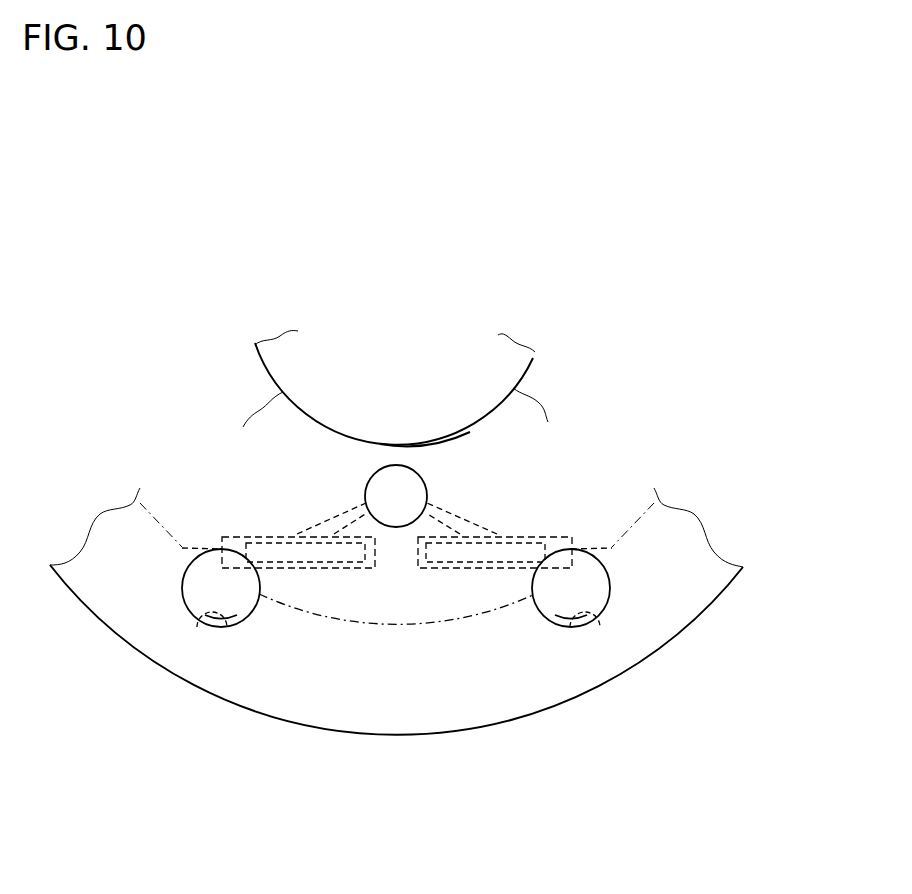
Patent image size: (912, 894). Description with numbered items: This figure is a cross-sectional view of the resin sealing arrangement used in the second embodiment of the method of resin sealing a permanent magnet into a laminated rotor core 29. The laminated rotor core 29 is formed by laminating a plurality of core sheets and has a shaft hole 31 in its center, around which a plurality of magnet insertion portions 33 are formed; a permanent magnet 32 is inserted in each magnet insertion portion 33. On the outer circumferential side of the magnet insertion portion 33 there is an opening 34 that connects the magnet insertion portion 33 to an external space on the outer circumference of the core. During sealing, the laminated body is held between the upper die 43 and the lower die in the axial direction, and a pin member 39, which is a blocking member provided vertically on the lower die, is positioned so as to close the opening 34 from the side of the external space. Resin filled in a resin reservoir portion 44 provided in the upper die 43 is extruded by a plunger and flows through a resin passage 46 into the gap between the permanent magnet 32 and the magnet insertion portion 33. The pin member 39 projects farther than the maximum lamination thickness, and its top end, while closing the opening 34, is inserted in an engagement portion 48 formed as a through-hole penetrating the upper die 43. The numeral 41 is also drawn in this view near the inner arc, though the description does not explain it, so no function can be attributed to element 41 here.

The laminated rotor core 29 is at (405, 667).
The shaft hole 31 is at (493, 385).
The permanent magnet 32 is at (321, 552).
The magnet insertion portion 33 is at (258, 538).
The opening 34 is at (225, 562).
The pin member 39 is at (229, 600).
The inner member 41 is at (283, 359).
The upper die 43 is at (682, 572).
The resin reservoir portion 44 is at (396, 490).
The resin passage 46 is at (336, 515).
The engagement portion 48 is at (232, 597).